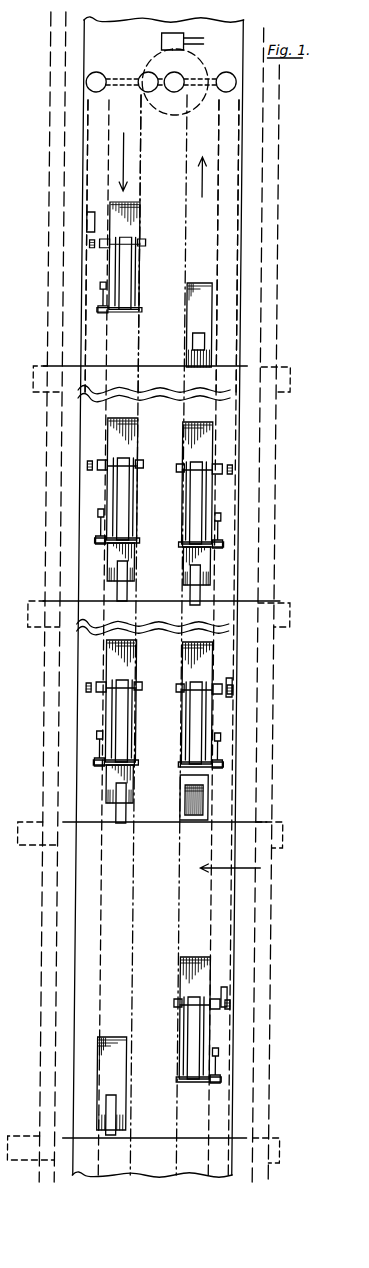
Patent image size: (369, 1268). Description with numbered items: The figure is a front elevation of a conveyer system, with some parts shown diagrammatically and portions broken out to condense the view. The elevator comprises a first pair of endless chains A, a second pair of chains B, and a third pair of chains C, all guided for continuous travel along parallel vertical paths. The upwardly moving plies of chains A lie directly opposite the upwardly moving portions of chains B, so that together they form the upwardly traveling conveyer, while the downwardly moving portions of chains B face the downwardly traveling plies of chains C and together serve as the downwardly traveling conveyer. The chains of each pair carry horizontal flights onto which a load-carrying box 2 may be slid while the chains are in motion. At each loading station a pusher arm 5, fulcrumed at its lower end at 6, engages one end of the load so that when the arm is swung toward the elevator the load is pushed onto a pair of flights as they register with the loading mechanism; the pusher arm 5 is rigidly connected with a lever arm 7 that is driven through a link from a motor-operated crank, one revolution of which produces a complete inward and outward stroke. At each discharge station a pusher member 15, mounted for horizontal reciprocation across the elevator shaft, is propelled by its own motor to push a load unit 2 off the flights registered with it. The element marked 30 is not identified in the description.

The load-carrying box 2 is at (200, 133).
The pusher arm 5 is at (112, 263).
The fulcrum 6 is at (145, 309).
The lever arm 7 is at (100, 296).
The pusher member 15 is at (203, 337).
The stop bracket 30 is at (88, 222).
The endless chains A is at (217, 128).
The endless chains B is at (188, 134).
The endless chains C is at (107, 126).